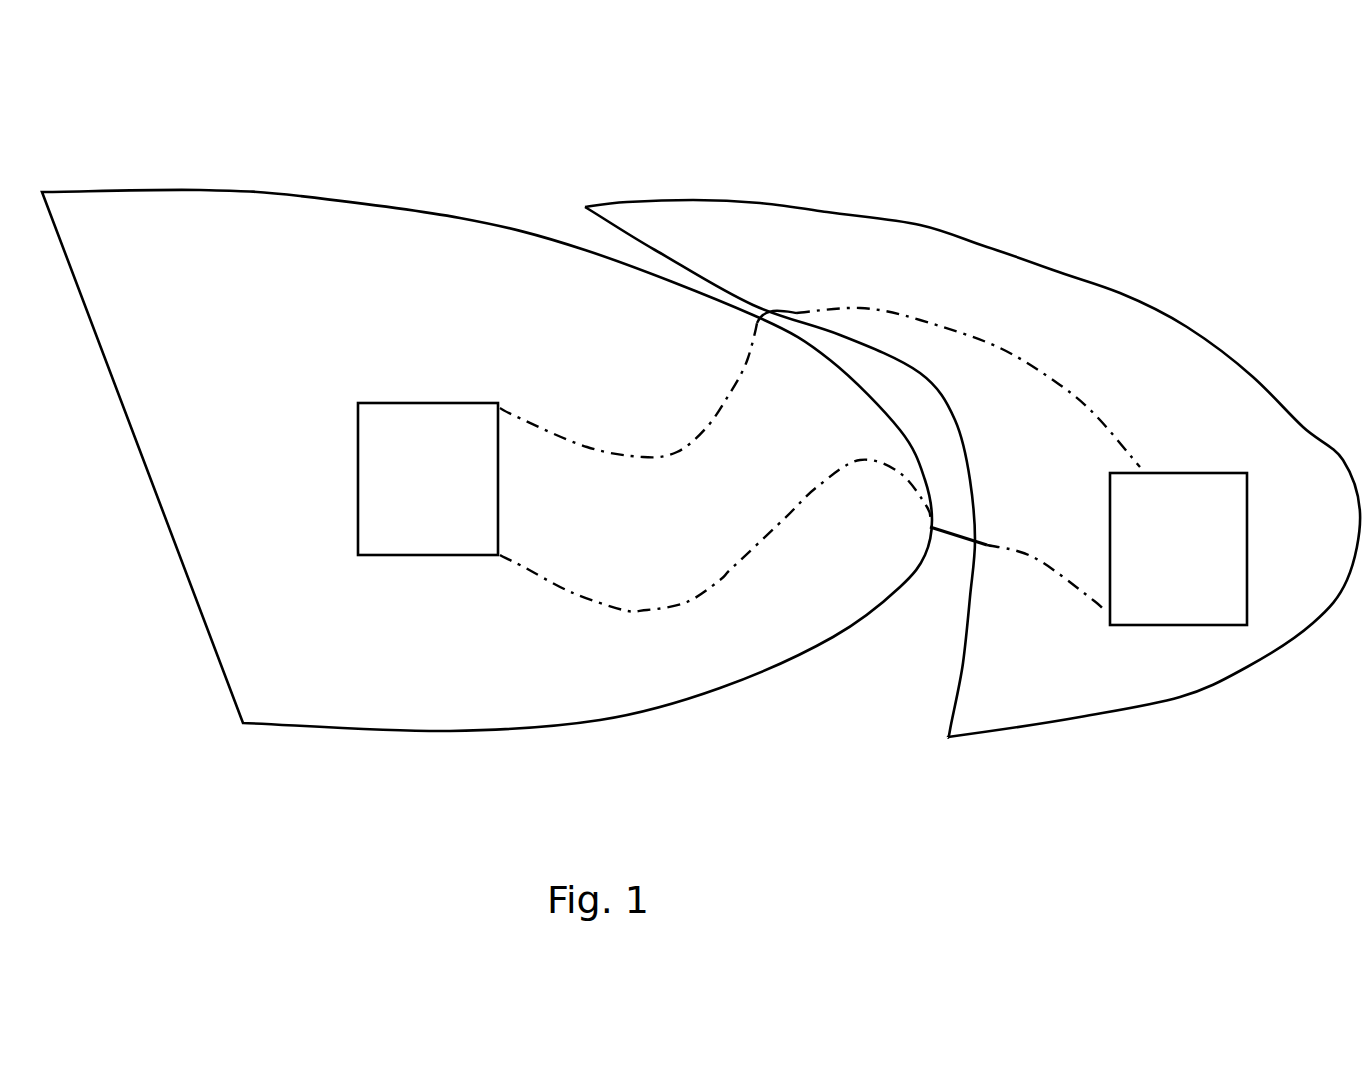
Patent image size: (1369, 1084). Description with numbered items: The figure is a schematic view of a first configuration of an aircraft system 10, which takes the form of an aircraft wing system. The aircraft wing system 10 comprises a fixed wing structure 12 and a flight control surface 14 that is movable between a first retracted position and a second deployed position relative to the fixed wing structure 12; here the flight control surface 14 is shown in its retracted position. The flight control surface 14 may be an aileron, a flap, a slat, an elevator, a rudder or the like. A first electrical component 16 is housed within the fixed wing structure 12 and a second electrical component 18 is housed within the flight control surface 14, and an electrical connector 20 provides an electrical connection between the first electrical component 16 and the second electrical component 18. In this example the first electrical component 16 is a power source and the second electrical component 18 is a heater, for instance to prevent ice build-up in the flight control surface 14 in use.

The aircraft system 10 is at (1118, 170).
The fixed wing structure 12 is at (190, 240).
The flight control surface 14 is at (895, 267).
The first electrical component 16 is at (644, 461).
The second electrical component 18 is at (1022, 466).
The electrical connector 20 is at (960, 510).